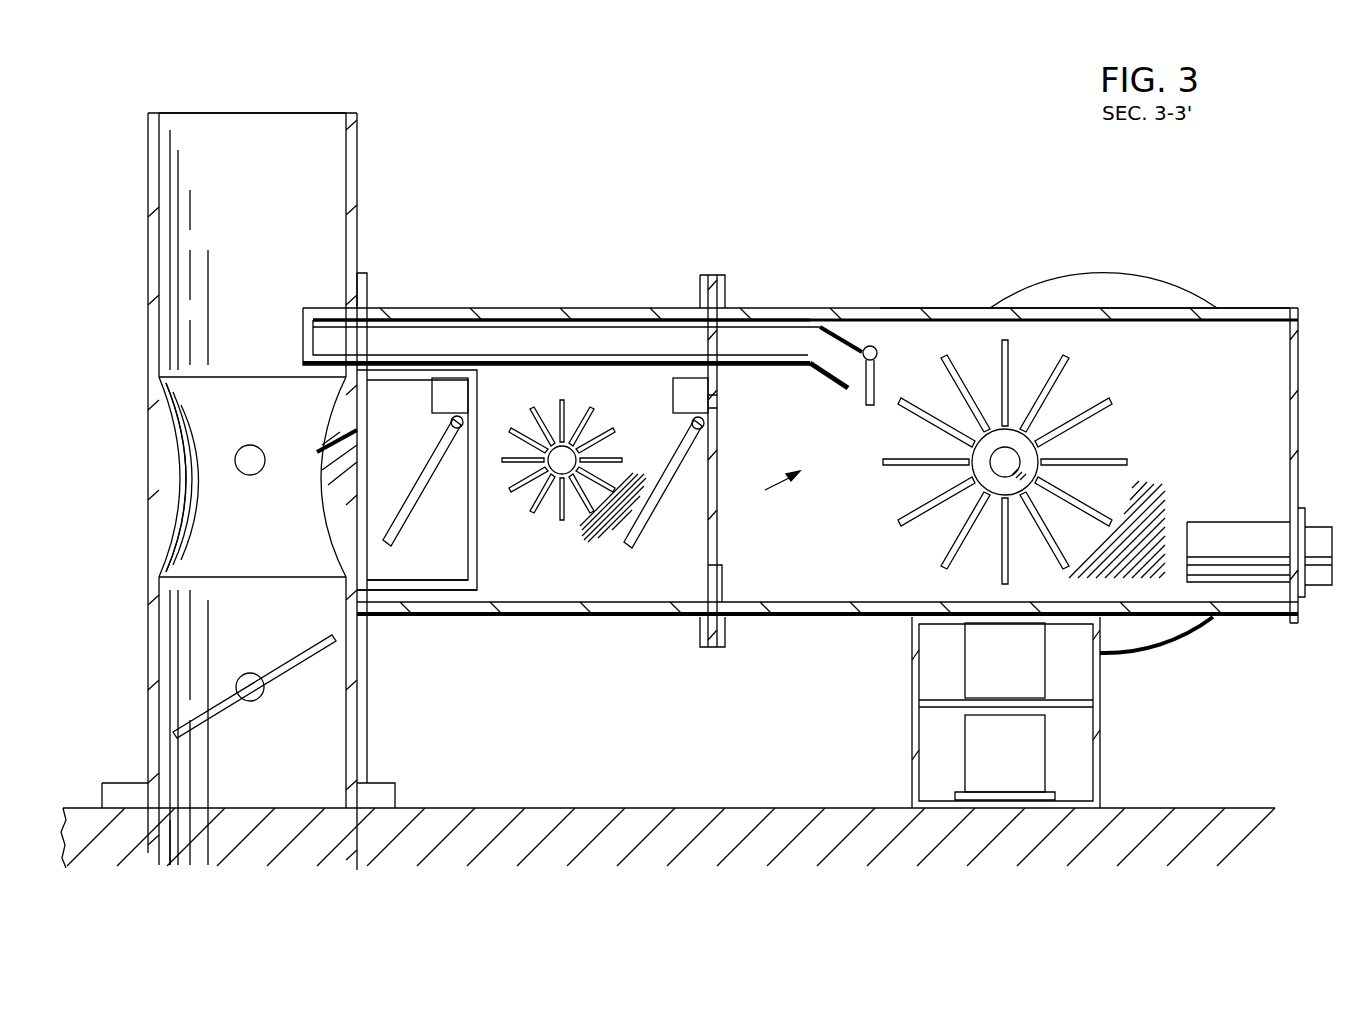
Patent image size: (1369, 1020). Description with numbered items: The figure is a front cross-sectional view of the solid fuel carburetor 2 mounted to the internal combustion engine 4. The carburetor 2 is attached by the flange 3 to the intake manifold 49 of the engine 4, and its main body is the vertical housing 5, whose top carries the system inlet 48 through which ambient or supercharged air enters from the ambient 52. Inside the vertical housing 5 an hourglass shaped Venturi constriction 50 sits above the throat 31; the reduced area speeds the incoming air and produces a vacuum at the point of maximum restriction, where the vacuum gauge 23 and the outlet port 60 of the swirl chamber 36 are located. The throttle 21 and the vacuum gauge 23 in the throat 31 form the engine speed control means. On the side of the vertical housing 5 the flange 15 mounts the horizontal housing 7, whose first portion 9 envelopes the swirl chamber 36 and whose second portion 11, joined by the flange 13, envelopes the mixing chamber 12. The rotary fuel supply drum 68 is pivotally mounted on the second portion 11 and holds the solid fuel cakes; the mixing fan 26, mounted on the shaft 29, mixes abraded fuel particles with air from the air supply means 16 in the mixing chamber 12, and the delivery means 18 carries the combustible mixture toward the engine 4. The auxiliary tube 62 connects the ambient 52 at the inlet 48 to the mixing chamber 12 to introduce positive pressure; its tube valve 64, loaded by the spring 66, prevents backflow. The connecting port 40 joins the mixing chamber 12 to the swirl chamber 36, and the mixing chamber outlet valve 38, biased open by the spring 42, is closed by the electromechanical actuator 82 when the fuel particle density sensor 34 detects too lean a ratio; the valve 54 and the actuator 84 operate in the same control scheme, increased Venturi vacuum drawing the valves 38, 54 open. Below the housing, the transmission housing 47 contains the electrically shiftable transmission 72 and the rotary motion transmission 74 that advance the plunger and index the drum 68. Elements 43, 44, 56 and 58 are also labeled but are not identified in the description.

The solid fuel carburetor 2 is at (970, 204).
The flange 3 is at (395, 782).
The internal combustion engine 4 is at (668, 869).
The vertical housing 5 is at (152, 245).
The horizontal housing 7 is at (722, 228).
The first portion 9 is at (575, 320).
The second portion 11 is at (900, 308).
The mixing chamber 12 is at (818, 560).
The flange 13 is at (727, 287).
The flange 15 is at (372, 292).
The air supply means 16 is at (766, 490).
The delivery means 18 is at (546, 650).
The throttle 21 is at (263, 700).
The vacuum gauge 23 is at (262, 448).
The mixing fan 26 is at (1110, 395).
The shaft 29 is at (1015, 462).
The throat 31 is at (272, 624).
The fuel particle density sensor 34 is at (1232, 530).
The swirl chamber 36 is at (596, 594).
The mixing chamber outlet valve 38 is at (643, 520).
The connecting port 40 is at (715, 550).
The spring 42 is at (690, 425).
The bottom plate 43 is at (433, 591).
The rotary beater 44 is at (548, 410).
The transmission housing 47 is at (1103, 736).
The system inlet 48 is at (322, 112).
The intake manifold 49 is at (258, 862).
The Venturi constriction 50 is at (177, 430).
The ambient 52 is at (226, 92).
The valve 54 is at (400, 510).
The gate channel 56 is at (478, 566).
The pivot 58 is at (448, 425).
The outlet port 60 is at (322, 472).
The auxiliary tube 62 is at (620, 340).
The tube valve 64 is at (868, 408).
The spring 66 is at (855, 332).
The rotary fuel supply drum 68 is at (1170, 296).
The electrically shiftable transmission 72 is at (1020, 762).
The rotary motion transmission 74 is at (1020, 669).
The electromechanical actuator 82 is at (708, 402).
The actuator 84 is at (443, 380).